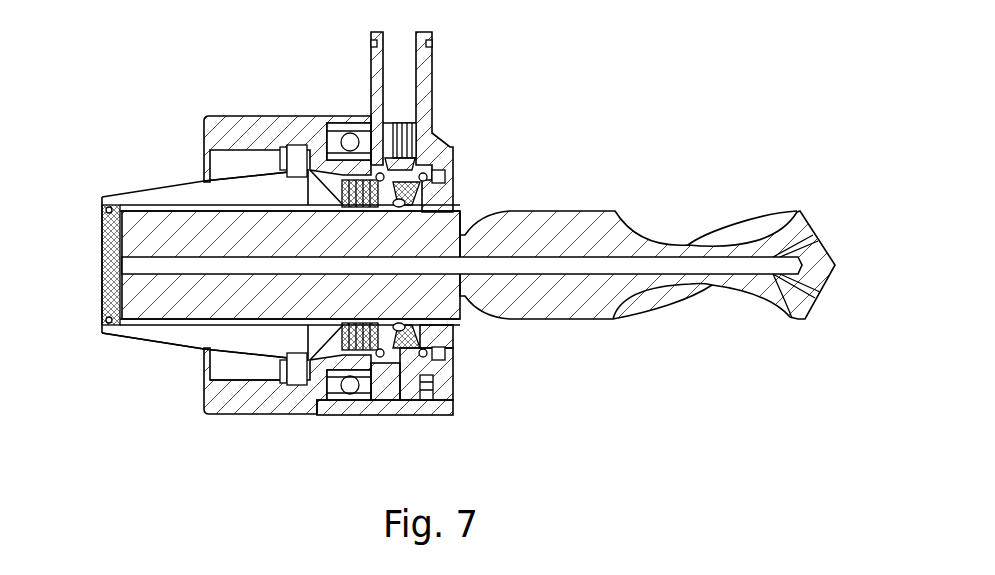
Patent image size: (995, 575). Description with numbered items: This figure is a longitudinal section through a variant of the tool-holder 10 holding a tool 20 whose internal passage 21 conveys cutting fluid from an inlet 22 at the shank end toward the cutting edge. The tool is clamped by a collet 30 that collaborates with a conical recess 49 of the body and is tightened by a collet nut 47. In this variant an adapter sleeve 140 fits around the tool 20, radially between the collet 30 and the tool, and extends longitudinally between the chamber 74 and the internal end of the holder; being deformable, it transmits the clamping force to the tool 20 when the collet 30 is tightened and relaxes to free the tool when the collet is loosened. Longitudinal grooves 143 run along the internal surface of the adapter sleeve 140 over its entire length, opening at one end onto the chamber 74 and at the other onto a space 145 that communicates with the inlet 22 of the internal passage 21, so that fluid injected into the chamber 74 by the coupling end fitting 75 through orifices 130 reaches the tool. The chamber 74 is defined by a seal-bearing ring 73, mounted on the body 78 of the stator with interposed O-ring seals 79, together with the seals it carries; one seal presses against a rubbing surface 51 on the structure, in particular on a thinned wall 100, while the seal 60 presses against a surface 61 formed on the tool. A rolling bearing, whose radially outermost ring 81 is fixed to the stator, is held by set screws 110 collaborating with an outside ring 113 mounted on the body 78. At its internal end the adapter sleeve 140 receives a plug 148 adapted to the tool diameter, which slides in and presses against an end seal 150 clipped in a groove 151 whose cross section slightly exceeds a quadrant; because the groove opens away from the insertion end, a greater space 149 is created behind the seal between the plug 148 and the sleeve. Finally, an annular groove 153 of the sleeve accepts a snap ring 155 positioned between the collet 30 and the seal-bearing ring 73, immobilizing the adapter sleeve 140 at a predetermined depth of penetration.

The tool-holder 10 is at (653, 93).
The tool 20 is at (592, 320).
The internal passage 21 is at (578, 262).
The inlet 22 is at (100, 292).
The collet 30 is at (197, 340).
The collet nut 47 is at (230, 403).
The conical recess 49 is at (115, 338).
The rubbing surface 51 is at (372, 213).
The seal 60 is at (448, 167).
The surface 61 is at (397, 333).
The seal-bearing ring 73 is at (423, 353).
The chamber 74 is at (410, 340).
The coupling end fitting 75 is at (433, 53).
The body of the stator 78 is at (430, 133).
The O-ring seals 79 is at (425, 362).
The ring of the rolling bearing 81 is at (338, 410).
The thinned wall 100 is at (408, 393).
The set screws 110 is at (422, 405).
The outside ring 113 is at (432, 415).
The orifices 130 is at (403, 168).
The adapter sleeve 140 is at (170, 203).
The longitudinal grooves 143 is at (180, 200).
The space 145 is at (126, 290).
The plug 148 is at (100, 265).
The space 149 is at (108, 208).
The end seal 150 is at (112, 206).
The groove 151 is at (100, 223).
The annular groove 153 is at (303, 175).
The snap ring 155 is at (340, 200).